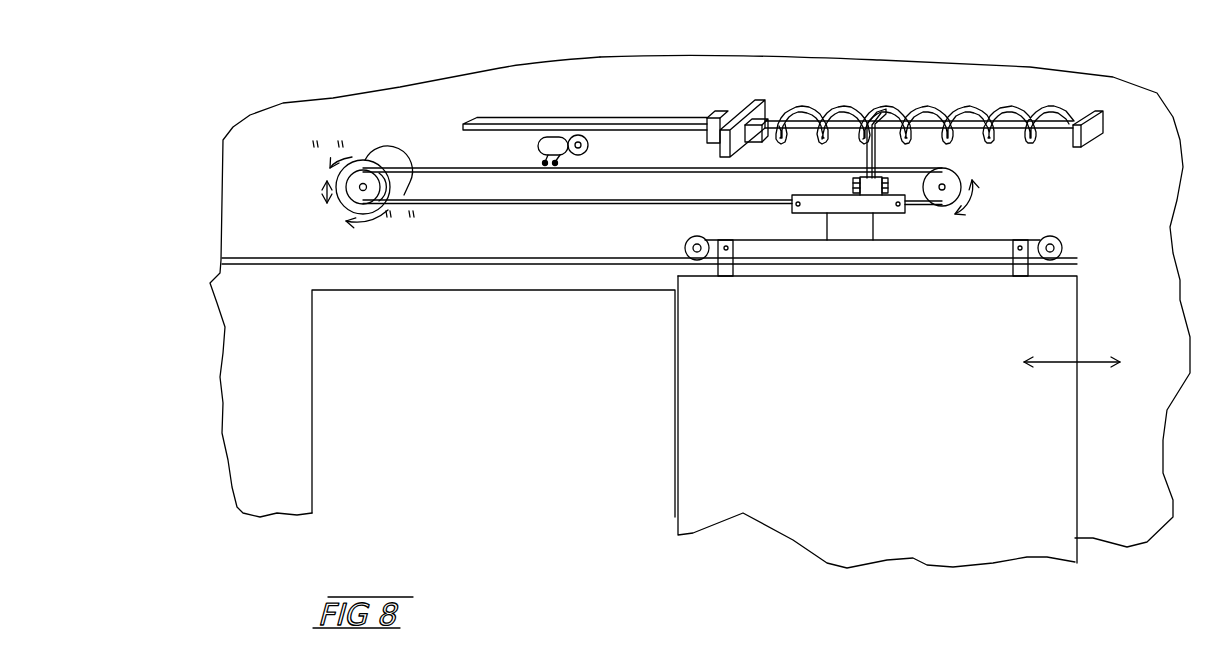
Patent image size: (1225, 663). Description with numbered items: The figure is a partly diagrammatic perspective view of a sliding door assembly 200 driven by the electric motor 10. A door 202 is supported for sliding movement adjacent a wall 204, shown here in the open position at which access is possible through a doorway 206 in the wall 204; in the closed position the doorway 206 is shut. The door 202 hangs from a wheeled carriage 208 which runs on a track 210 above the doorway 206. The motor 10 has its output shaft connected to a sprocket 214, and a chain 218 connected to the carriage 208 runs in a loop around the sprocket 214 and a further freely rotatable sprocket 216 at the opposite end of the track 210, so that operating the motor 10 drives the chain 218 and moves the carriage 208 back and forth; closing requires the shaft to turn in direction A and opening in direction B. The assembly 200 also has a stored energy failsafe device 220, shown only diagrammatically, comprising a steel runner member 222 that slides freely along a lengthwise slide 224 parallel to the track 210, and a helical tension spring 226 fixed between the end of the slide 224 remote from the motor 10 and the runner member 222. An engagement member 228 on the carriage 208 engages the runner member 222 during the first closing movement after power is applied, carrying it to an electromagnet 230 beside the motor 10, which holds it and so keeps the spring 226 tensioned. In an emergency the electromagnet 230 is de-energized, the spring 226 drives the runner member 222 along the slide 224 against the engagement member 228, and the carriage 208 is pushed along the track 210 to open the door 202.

The electric motor 10 is at (387, 155).
The sliding door assembly 200 is at (913, 52).
The door 202 is at (899, 422).
The wall 204 is at (1148, 466).
The doorway 206 is at (493, 403).
The wheeled carriage 208 is at (832, 203).
The track 210 is at (1076, 259).
The sprocket 214 is at (360, 191).
The freely rotatable sprocket 216 is at (950, 178).
The chain 218 is at (650, 207).
The stored energy failsafe device 220 is at (1013, 117).
The runner member 222 is at (762, 118).
The slide 224 is at (1102, 122).
The helical tension spring 226 is at (952, 116).
The engagement member 228 is at (882, 108).
The electromagnet 230 is at (558, 137).